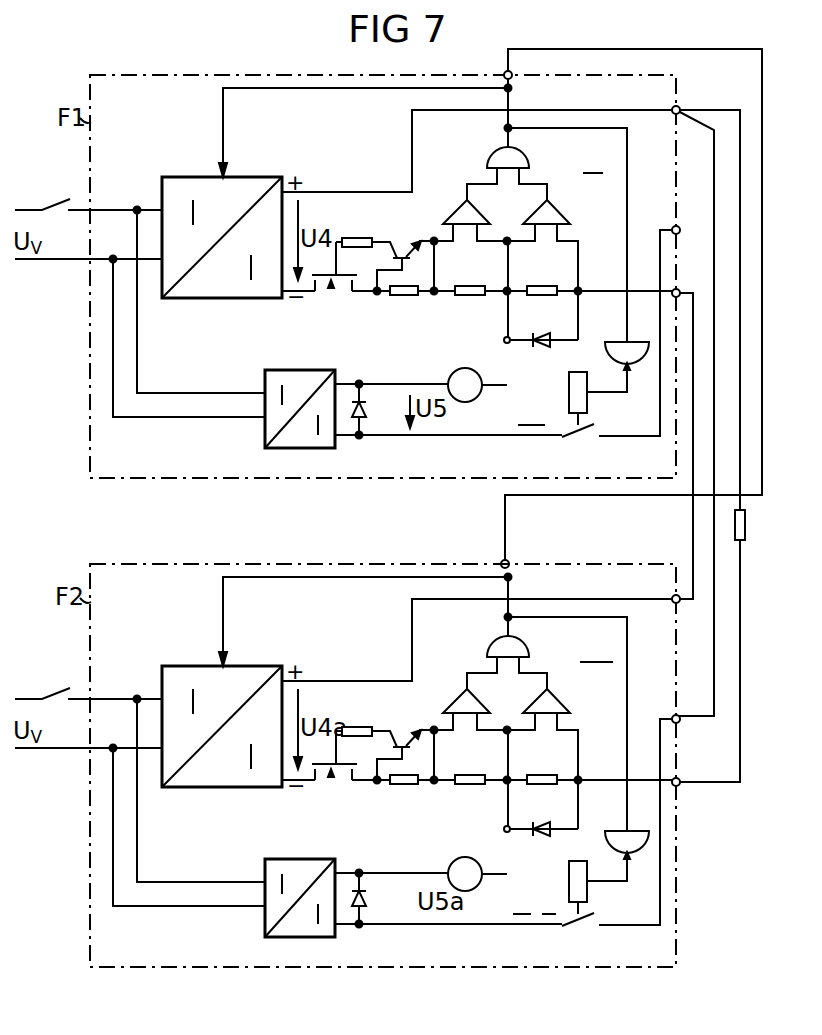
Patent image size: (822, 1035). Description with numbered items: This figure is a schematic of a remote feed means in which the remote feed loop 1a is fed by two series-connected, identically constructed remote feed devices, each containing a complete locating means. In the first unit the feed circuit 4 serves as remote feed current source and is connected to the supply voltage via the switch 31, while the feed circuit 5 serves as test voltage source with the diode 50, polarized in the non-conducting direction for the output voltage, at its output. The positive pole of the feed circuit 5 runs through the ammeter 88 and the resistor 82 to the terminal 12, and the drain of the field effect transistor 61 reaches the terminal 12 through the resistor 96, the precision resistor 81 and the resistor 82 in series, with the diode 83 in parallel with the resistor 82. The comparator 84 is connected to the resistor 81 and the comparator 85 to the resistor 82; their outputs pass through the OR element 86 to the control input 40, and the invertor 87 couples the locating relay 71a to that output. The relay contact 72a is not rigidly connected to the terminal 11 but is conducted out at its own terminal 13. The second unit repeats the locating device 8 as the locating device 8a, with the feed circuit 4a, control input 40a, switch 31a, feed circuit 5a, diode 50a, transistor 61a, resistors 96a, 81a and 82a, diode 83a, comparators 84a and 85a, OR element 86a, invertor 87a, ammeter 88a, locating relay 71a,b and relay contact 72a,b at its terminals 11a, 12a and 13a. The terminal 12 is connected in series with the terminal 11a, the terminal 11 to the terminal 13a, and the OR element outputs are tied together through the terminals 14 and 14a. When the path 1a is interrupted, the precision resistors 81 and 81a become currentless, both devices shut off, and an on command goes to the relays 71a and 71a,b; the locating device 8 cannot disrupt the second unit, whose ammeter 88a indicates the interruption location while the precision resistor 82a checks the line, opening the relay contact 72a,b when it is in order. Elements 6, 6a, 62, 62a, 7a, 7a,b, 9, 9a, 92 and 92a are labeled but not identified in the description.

The remote feed loop 1a is at (756, 528).
The feed circuit 4 is at (222, 224).
The feed circuit 4a is at (222, 713).
The control input 40 is at (240, 133).
The control input 40a is at (246, 622).
The feed circuit 5 is at (310, 395).
The feed circuit 5a is at (310, 884).
The diode 50 is at (375, 409).
The diode 50a is at (382, 898).
The output circuit 6 is at (335, 214).
The output circuit 6a is at (479, 654).
The field effect transistor 61 is at (334, 285).
The field effect transistor 61a is at (337, 774).
The resistor 62 is at (358, 229).
The resistor 62a is at (362, 718).
The relay 7a is at (534, 412).
The relay 7a,b is at (540, 901).
The locating relay 71a is at (603, 399).
The locating relay 71a,b is at (614, 888).
The relay contact 72a is at (587, 448).
The relay contact 72a,b is at (597, 937).
The locating device 8 is at (593, 162).
The locating device 8a is at (596, 651).
The precision resistor 81 is at (471, 277).
The precision resistor 81a is at (477, 766).
The resistor 82 is at (543, 277).
The precision resistor 82a is at (549, 766).
The diode 83 is at (541, 325).
The diode 83a is at (541, 814).
The comparator 84 is at (471, 215).
The comparator 84a is at (478, 704).
The comparator 85 is at (548, 265).
The comparator 85a is at (554, 754).
The OR element 86 is at (503, 167).
The OR element 86a is at (501, 656).
The invertor 87 is at (618, 351).
The invertor 87a is at (618, 840).
The ammeter 88 is at (467, 373).
The ammeter 88a is at (472, 862).
The control circuit 9 is at (393, 214).
The control circuit 9a is at (397, 696).
The transistor 92 is at (405, 253).
The transistor 92a is at (407, 742).
The resistor 96 is at (406, 306).
The resistor 96a is at (412, 795).
The terminal 11 is at (693, 97).
The terminal 11a is at (659, 589).
The terminal 12 is at (693, 287).
The terminal 12a is at (699, 770).
The terminal 13 is at (693, 232).
The terminal 13a is at (659, 705).
The terminal 14 is at (498, 62).
The terminal 14a is at (486, 551).
The switch 31 is at (42, 191).
The switch 31a is at (42, 682).